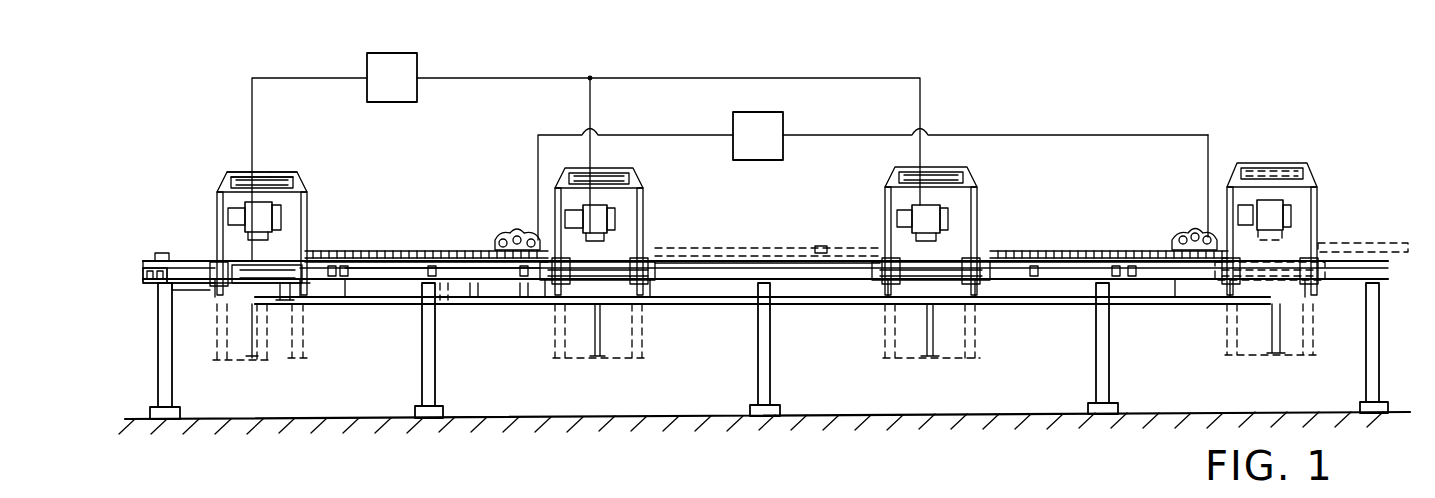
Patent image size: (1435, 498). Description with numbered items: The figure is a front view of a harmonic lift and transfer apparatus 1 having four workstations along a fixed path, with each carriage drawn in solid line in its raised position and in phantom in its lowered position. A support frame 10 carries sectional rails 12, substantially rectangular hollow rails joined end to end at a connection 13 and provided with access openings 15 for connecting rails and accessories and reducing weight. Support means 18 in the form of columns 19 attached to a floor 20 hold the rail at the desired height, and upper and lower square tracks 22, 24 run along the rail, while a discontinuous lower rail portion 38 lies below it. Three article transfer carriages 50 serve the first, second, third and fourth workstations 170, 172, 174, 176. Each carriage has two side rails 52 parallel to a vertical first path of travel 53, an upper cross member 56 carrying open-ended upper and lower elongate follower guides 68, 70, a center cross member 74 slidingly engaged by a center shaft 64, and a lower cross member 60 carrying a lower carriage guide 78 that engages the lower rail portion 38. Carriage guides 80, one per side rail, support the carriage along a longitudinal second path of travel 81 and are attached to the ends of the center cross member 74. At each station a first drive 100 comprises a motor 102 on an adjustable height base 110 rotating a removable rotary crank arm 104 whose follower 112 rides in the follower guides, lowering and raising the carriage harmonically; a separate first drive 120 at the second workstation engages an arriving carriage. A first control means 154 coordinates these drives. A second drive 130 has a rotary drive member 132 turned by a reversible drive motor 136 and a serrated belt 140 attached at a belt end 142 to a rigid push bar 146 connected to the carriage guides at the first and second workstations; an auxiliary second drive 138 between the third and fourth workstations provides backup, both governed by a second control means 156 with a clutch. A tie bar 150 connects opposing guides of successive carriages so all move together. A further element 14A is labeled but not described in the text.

The harmonic lift and transfer apparatus 1 is at (237, 78).
The support frame 10 is at (178, 325).
The sectional rail 12 is at (467, 275).
The end-to-end rail connection 13 is at (523, 280).
The carriage bracket 14A is at (560, 240).
The access openings 15 is at (450, 277).
The support means 18 is at (142, 290).
The columns 19 is at (157, 378).
The floor 20 is at (692, 416).
The upper track 22 is at (158, 256).
The lower track 24 is at (195, 288).
The lower rail portion 38 is at (328, 305).
The article transfer carriage 50 is at (350, 244).
The side rail 52 is at (215, 196).
The first path of travel 53 is at (303, 358).
The upper cross member 56 is at (257, 173).
The lower cross member 60 is at (237, 302).
The center shaft 64 is at (282, 190).
The upper elongate follower guide 68 is at (237, 173).
The lower elongate follower guide 70 is at (218, 192).
The center cross member 74 is at (233, 240).
The lower carriage guide 78 is at (284, 302).
The carriage guide 80 is at (322, 260).
The second path of travel 81 is at (387, 275).
The first drive 100 is at (300, 232).
The motor 102 is at (285, 225).
The rotary crank arm 104 is at (607, 207).
The adjustable height base 110 is at (300, 237).
The follower 112 is at (275, 175).
The first drive 120 is at (607, 222).
The second drive 130 is at (502, 226).
The rotary drive member 132 is at (1190, 233).
The drive motor 136 is at (1178, 233).
The auxiliary second drive 138 is at (1182, 218).
The belt 140 is at (432, 252).
The belt end 142 is at (158, 262).
The push bar 146 is at (444, 252).
The tie bar 150 is at (672, 262).
The first control means 154 is at (402, 95).
The second control means 156 is at (766, 153).
The first workstation 170 is at (284, 408).
The second workstation 172 is at (610, 408).
The third workstation 174 is at (955, 403).
The fourth workstation 176 is at (1297, 399).